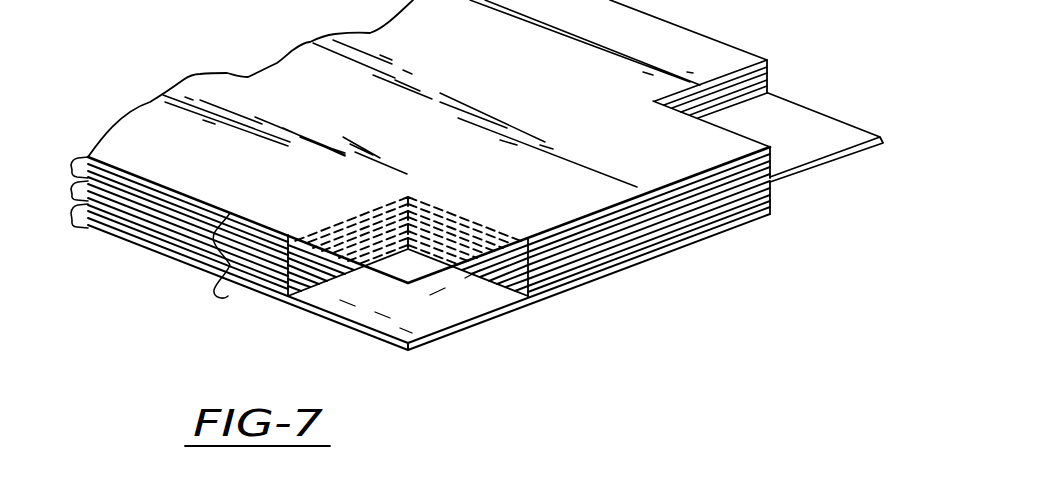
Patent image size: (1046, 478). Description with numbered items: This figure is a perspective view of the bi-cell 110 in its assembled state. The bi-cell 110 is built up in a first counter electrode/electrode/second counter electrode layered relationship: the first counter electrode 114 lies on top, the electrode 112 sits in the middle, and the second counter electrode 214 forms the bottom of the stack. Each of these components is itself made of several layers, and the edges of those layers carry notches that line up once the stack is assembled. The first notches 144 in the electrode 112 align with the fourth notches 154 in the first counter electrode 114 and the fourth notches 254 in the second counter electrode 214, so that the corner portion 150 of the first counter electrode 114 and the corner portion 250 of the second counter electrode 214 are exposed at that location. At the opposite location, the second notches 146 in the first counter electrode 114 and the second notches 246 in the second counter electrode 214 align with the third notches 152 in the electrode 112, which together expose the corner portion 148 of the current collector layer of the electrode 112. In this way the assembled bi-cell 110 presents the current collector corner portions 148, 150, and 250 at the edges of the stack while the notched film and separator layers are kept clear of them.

The bi-cell 110 is at (214, 262).
The electrode 112 is at (71, 190).
The first counter electrode 114 is at (71, 163).
The first notch 144 is at (577, 262).
The second notch 146 is at (775, 160).
The corner portion 148 is at (858, 138).
The corner portion 150 is at (426, 272).
The third notch 152 is at (772, 156).
The fourth notch 154 is at (429, 141).
The second counter electrode 214 is at (71, 216).
The second notch 246 is at (773, 202).
The corner portion 250 is at (428, 320).
The fourth notch 254 is at (315, 284).